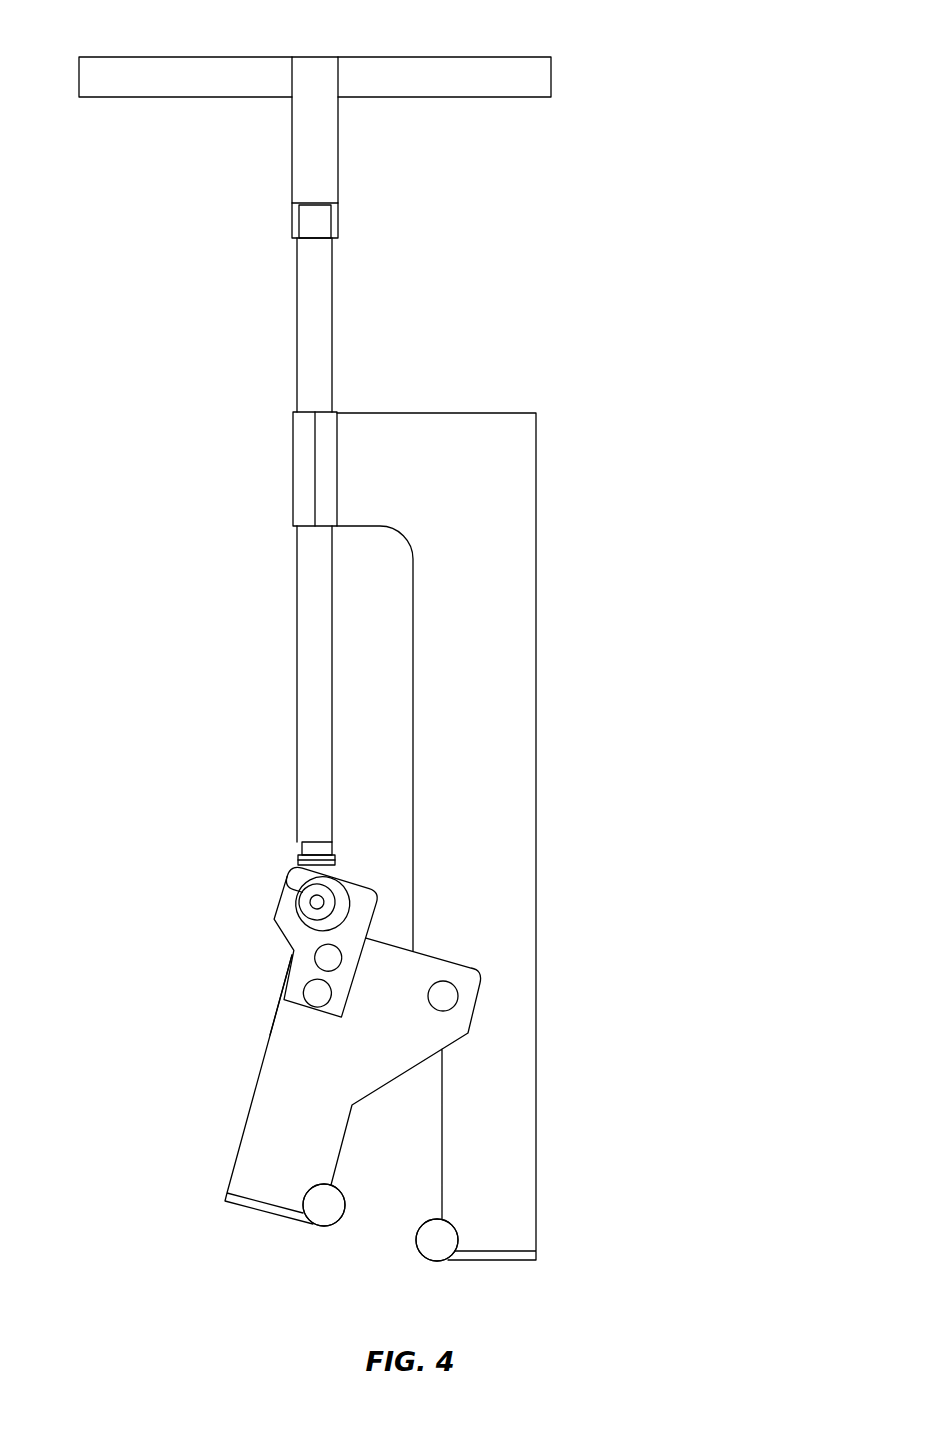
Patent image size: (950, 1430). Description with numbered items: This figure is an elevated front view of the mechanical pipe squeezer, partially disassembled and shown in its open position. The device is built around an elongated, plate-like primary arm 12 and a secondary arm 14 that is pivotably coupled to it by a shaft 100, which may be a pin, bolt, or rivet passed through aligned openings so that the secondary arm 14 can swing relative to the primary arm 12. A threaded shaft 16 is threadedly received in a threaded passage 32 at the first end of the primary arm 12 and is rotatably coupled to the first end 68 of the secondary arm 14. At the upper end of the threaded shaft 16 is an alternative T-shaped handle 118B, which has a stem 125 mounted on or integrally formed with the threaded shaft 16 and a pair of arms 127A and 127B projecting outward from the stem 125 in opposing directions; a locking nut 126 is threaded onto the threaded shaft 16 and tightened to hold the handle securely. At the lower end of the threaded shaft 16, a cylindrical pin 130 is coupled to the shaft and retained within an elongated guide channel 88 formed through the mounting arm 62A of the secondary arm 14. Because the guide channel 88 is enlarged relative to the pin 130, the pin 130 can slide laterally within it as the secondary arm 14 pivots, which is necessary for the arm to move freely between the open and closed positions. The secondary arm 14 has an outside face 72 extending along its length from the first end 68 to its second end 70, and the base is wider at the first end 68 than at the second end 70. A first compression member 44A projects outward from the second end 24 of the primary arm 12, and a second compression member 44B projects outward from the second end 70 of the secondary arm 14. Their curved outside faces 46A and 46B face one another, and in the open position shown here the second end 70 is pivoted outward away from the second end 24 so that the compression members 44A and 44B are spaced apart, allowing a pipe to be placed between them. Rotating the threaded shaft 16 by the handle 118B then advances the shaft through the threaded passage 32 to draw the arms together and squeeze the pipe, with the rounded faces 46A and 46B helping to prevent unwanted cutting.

The arm 127B is at (157, 56).
The arm 127A is at (437, 56).
The handle 118B is at (750, 47).
The stem 125 is at (340, 147).
The locking nut 126 is at (342, 217).
The threaded shaft 16 is at (335, 327).
The threaded passage 32 is at (335, 412).
The primary arm 12 is at (531, 884).
The cylindrical pin 130 is at (287, 883).
The guide channel 88 is at (351, 902).
The first end 68 is at (195, 900).
The mounting arm 62A is at (300, 933).
The outside face 72 is at (287, 1001).
The secondary arm 14 is at (263, 1098).
The shaft 100 is at (458, 994).
The second end 70 is at (190, 1190).
The outside face 46A is at (417, 1238).
The outside face 46B is at (347, 1218).
The second compression member 44B is at (327, 1218).
The first compression member 44A is at (437, 1249).
The second end 24 is at (585, 1268).